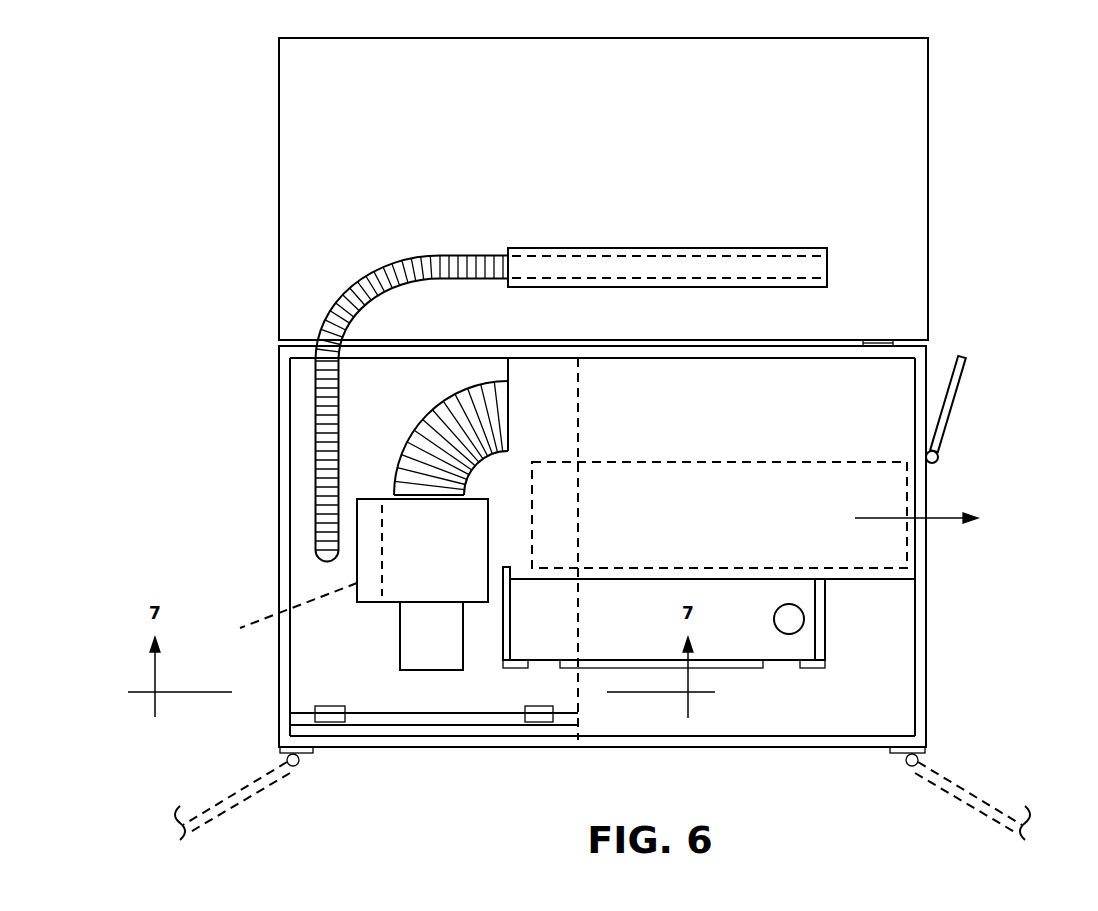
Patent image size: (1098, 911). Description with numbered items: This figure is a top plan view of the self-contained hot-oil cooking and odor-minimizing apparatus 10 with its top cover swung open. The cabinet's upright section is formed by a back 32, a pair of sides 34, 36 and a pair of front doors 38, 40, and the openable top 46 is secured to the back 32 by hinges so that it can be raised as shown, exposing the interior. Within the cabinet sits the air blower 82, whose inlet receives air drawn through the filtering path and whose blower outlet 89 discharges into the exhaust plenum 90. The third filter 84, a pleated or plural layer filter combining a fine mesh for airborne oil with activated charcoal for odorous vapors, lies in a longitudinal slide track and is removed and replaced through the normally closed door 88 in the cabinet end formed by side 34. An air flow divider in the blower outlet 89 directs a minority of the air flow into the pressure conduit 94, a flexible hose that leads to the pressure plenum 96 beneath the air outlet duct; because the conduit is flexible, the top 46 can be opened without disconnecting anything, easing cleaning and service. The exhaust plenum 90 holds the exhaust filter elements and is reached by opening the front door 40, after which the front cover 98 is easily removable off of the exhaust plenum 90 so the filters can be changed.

The apparatus 10 is at (978, 90).
The back 32 is at (805, 347).
The side 34 is at (928, 655).
The side 36 is at (278, 455).
The front door 38 is at (808, 748).
The front door 40 is at (465, 748).
The openable top 46 is at (603, 189).
The air blower 82 is at (432, 514).
The third filter 84 is at (843, 507).
The door 88 is at (960, 383).
The blower outlet 89 is at (286, 613).
The exhaust plenum 90 is at (455, 549).
The pressure conduit 94 is at (367, 293).
The pressure plenum 96 is at (707, 250).
The front cover 98 is at (423, 725).